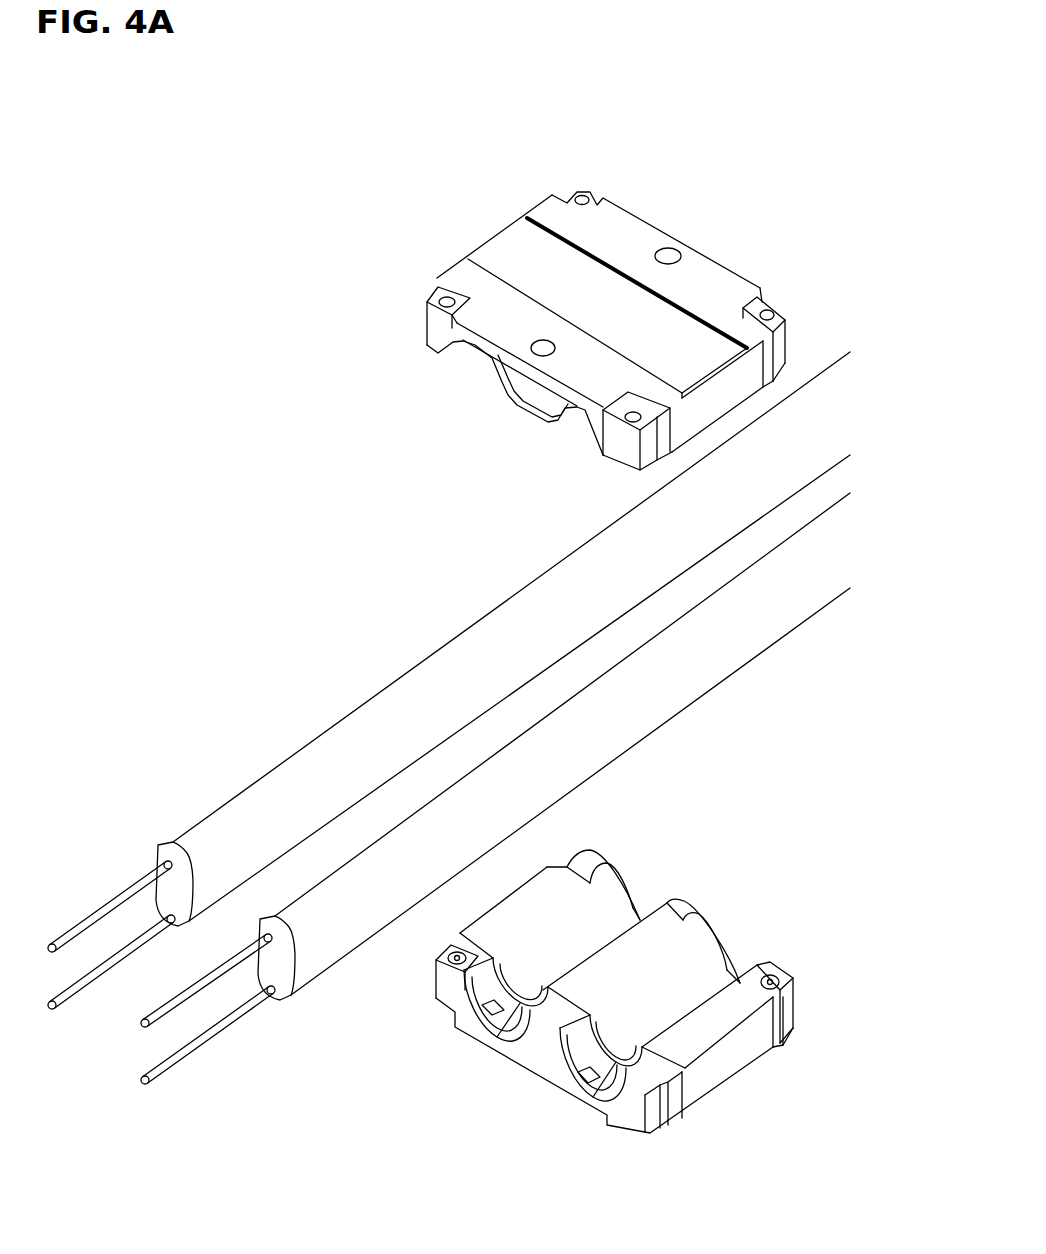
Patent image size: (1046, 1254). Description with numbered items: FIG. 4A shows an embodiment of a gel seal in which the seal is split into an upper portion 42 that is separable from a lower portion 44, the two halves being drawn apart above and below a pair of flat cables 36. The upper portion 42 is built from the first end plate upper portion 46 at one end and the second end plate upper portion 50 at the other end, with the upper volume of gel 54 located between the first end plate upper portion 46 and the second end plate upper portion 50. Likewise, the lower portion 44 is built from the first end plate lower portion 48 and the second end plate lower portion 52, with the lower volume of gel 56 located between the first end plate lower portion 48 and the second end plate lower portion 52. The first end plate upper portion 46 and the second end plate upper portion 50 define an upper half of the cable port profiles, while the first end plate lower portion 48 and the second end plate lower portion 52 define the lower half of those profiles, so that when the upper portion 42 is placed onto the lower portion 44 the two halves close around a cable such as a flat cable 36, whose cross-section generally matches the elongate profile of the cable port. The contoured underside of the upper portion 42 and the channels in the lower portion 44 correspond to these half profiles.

The guide rail 36 is at (412, 665).
The upper bearing block 42 is at (578, 292).
The lower bearing block 44 is at (620, 989).
The lower housing portion 46 is at (437, 342).
The housing body 48 is at (445, 997).
The top plate 50 is at (752, 283).
The mounting tab 52 is at (787, 1015).
The upper housing portion 54 is at (495, 238).
The side wall 56 is at (710, 1078).